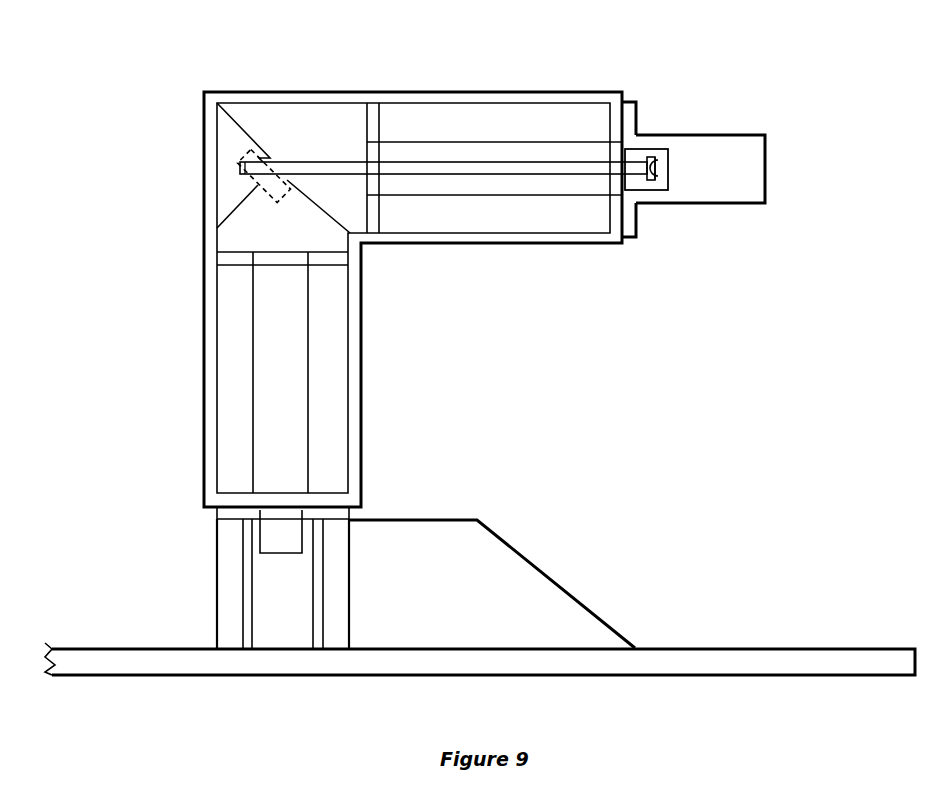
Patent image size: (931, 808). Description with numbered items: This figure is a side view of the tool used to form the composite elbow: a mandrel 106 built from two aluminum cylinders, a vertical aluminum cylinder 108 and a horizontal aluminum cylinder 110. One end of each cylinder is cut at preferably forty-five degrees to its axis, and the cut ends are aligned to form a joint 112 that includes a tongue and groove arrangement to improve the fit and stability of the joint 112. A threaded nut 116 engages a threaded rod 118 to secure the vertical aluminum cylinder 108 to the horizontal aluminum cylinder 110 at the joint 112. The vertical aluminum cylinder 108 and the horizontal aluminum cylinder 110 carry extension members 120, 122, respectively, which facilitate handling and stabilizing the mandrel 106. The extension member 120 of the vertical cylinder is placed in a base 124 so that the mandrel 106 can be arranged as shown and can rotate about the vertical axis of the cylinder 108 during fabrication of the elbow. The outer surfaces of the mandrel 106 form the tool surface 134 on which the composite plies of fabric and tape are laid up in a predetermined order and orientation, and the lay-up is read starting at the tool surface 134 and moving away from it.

The mandrel 106 is at (121, 354).
The vertical aluminum cylinder 108 is at (353, 405).
The horizontal aluminum cylinder 110 is at (522, 237).
The joint 112 is at (238, 123).
The threaded nut 116 is at (217, 228).
The threaded rod 118 is at (410, 174).
The extension member 120 is at (273, 578).
The extension member 122 is at (700, 188).
The base 124 is at (528, 557).
The tool surface 134 is at (503, 132).